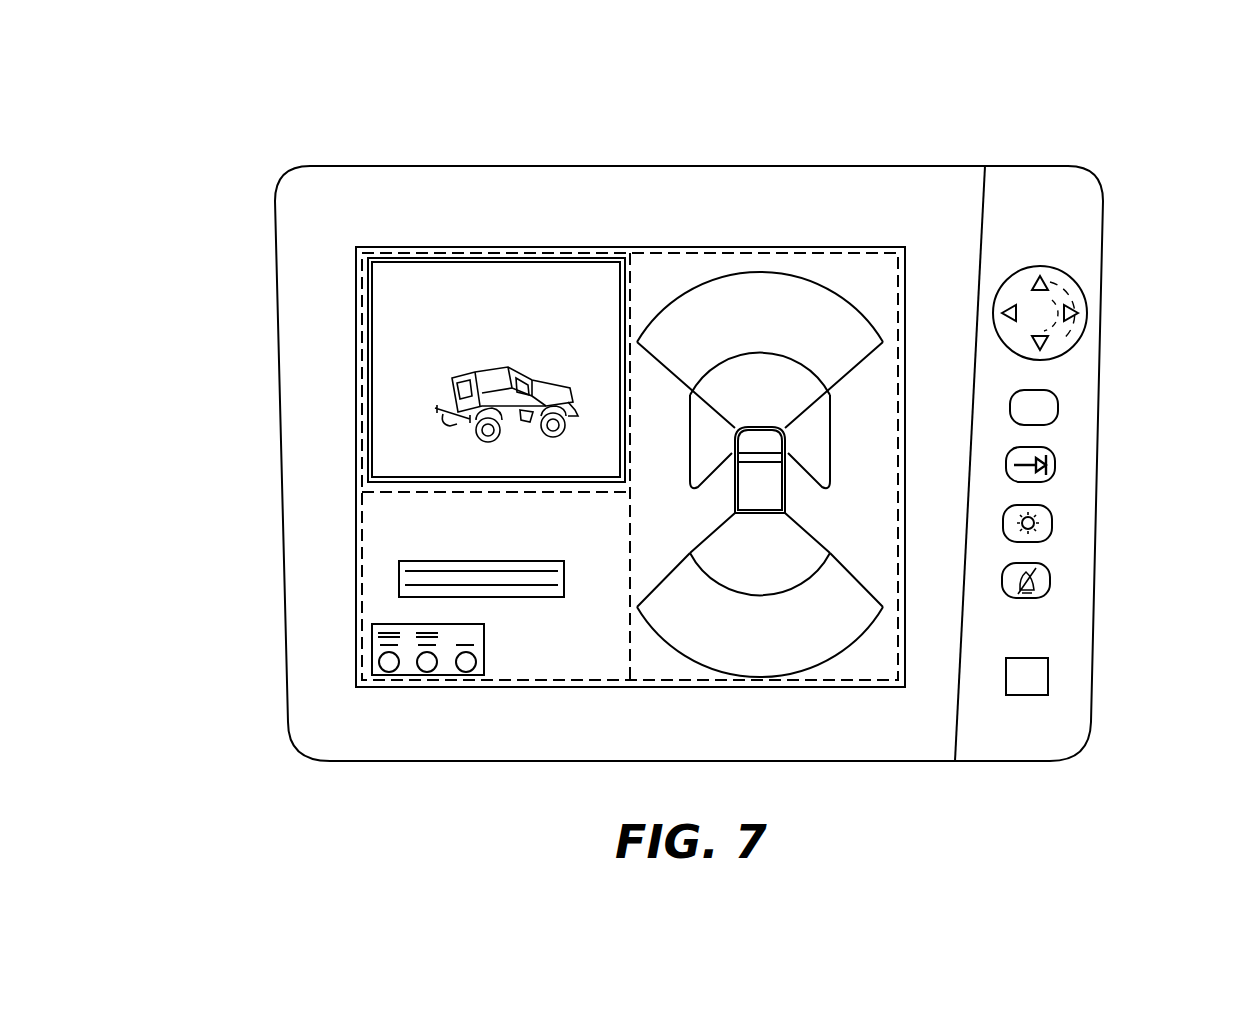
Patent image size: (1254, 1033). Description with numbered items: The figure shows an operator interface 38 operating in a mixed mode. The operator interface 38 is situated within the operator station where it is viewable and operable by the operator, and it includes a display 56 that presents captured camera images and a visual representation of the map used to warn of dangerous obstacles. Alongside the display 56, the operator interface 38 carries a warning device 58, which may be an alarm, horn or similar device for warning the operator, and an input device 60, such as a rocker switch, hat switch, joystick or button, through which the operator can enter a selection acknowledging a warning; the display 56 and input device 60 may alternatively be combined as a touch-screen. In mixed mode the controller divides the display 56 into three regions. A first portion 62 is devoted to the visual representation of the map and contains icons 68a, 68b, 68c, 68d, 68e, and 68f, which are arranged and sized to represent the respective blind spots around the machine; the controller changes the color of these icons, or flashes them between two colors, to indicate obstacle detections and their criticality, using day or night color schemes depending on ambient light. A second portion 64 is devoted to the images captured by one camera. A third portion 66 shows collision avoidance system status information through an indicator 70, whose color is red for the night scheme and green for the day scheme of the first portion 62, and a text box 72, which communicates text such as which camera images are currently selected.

The operator interface 38 is at (1183, 133).
The display 56 is at (905, 122).
The input device 60 is at (1050, 580).
The warning device 58 is at (1012, 690).
The first portion 62 is at (685, 240).
The second portion 64 is at (453, 273).
The third portion 66 is at (347, 553).
The icon 68a is at (740, 641).
The icon 68b is at (740, 328).
The icon 68c is at (740, 567).
The icon 68d is at (740, 405).
The icon 68e is at (832, 453).
The icon 68f is at (688, 453).
The indicator 70 is at (410, 667).
The text box 72 is at (528, 597).